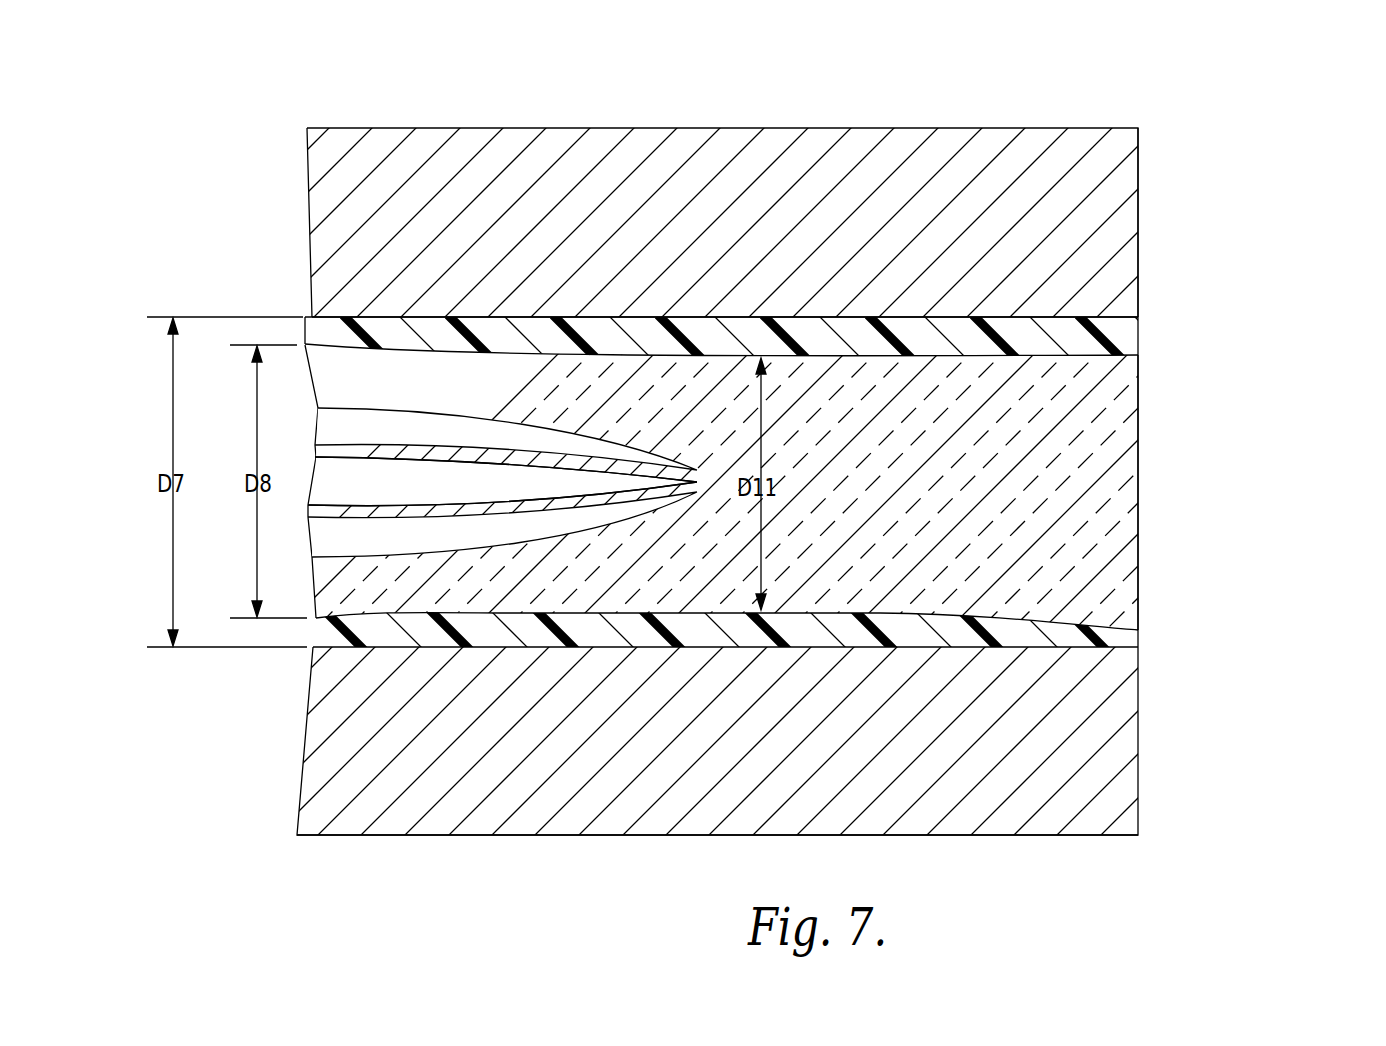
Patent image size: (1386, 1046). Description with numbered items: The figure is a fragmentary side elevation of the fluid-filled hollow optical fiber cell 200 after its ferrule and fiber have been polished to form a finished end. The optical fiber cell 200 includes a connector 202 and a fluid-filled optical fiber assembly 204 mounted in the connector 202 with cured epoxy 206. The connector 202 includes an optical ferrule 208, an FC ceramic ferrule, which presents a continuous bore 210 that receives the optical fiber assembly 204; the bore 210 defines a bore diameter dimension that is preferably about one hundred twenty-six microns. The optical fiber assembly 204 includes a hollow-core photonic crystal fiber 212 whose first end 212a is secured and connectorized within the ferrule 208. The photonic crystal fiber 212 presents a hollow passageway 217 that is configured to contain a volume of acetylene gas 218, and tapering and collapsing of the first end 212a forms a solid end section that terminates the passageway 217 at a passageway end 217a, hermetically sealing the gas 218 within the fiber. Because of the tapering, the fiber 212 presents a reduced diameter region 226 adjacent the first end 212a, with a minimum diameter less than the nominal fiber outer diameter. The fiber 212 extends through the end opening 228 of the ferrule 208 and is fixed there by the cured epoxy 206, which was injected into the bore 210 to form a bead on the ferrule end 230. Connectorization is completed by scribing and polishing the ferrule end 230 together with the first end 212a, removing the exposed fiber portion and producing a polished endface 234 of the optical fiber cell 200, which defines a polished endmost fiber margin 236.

The optical fiber cell 200 is at (1166, 92).
The connector 202 is at (716, 198).
The optical fiber assembly 204 is at (829, 351).
The cured epoxy 206 is at (786, 488).
The optical ferrule 208 is at (540, 152).
The bore 210 is at (498, 643).
The photonic crystal fiber 212 is at (937, 393).
The first end 212a is at (1206, 160).
The passageway 217 is at (381, 410).
The passageway end 217a is at (469, 572).
The acetylene gas 218 is at (370, 532).
The reduced diameter region 226 is at (469, 297).
The end opening 228 is at (1140, 313).
The ferrule end 230 is at (1138, 742).
The polished endface 234 is at (1138, 557).
The polished endmost fiber margin 236 is at (1138, 465).